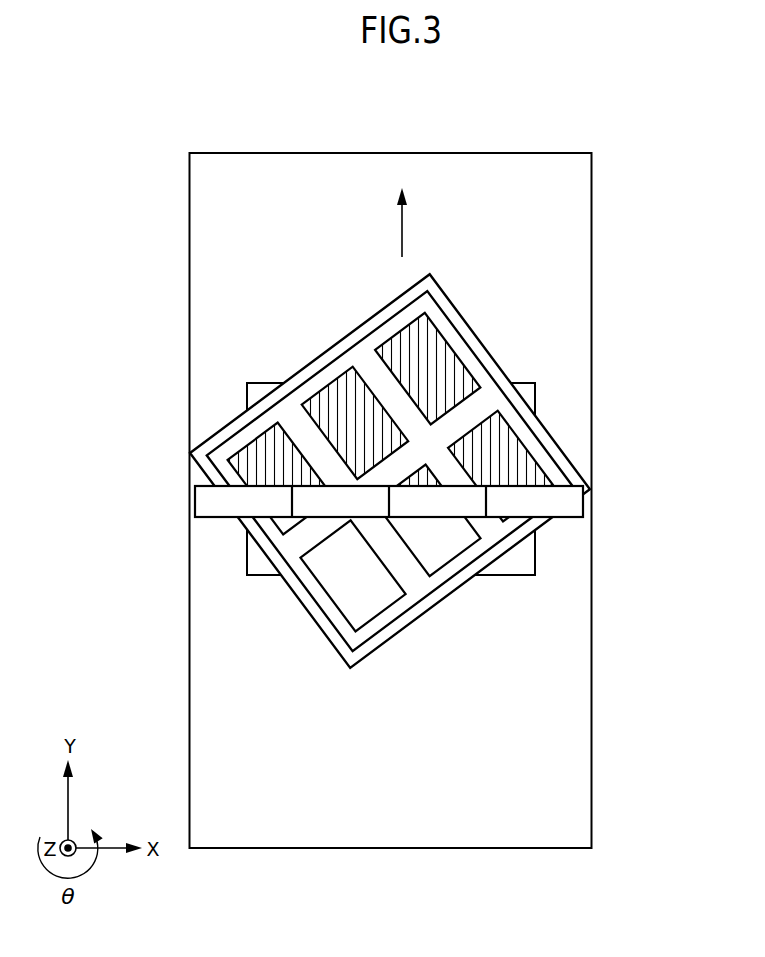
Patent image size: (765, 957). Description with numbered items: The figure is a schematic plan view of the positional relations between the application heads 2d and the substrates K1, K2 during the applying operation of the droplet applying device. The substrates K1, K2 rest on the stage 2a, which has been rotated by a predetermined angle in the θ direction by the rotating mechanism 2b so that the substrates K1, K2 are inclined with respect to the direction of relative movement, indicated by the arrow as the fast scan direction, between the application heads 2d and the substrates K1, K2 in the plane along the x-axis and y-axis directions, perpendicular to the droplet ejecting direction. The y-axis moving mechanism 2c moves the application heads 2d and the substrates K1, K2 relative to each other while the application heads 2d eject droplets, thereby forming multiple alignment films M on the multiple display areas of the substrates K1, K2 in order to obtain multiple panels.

The stage 2a is at (380, 471).
The rotating mechanism 2b is at (535, 393).
The y-axis moving mechanism 2c is at (592, 223).
The application heads 2d is at (467, 510).
The alignment films M is at (376, 346).
The substrate K1 is at (218, 458).
The substrate K2 is at (390, 471).